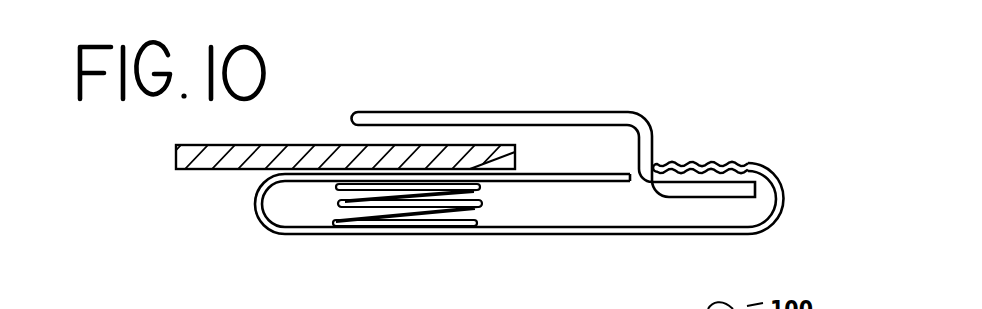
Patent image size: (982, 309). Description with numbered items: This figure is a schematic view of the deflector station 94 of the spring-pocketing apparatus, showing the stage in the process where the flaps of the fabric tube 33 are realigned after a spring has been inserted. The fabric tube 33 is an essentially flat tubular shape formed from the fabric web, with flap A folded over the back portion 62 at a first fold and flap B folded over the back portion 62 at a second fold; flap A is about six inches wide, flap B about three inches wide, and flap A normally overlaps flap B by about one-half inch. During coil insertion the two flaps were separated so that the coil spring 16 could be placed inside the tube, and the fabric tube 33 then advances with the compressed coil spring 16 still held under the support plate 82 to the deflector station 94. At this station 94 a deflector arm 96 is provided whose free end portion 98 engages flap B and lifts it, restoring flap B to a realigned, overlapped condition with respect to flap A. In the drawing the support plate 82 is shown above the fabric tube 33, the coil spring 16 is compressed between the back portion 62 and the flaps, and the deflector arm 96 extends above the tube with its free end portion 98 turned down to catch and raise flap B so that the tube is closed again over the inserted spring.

The support plate 82 is at (332, 154).
The deflector station 94 is at (572, 114).
The deflector arm 96 is at (535, 112).
The free end portion 98 is at (737, 184).
The fabric tube 33 is at (507, 191).
The back portion 62 is at (402, 243).
The coil spring 16 is at (334, 223).
The flap A is at (543, 173).
The flap B is at (704, 162).